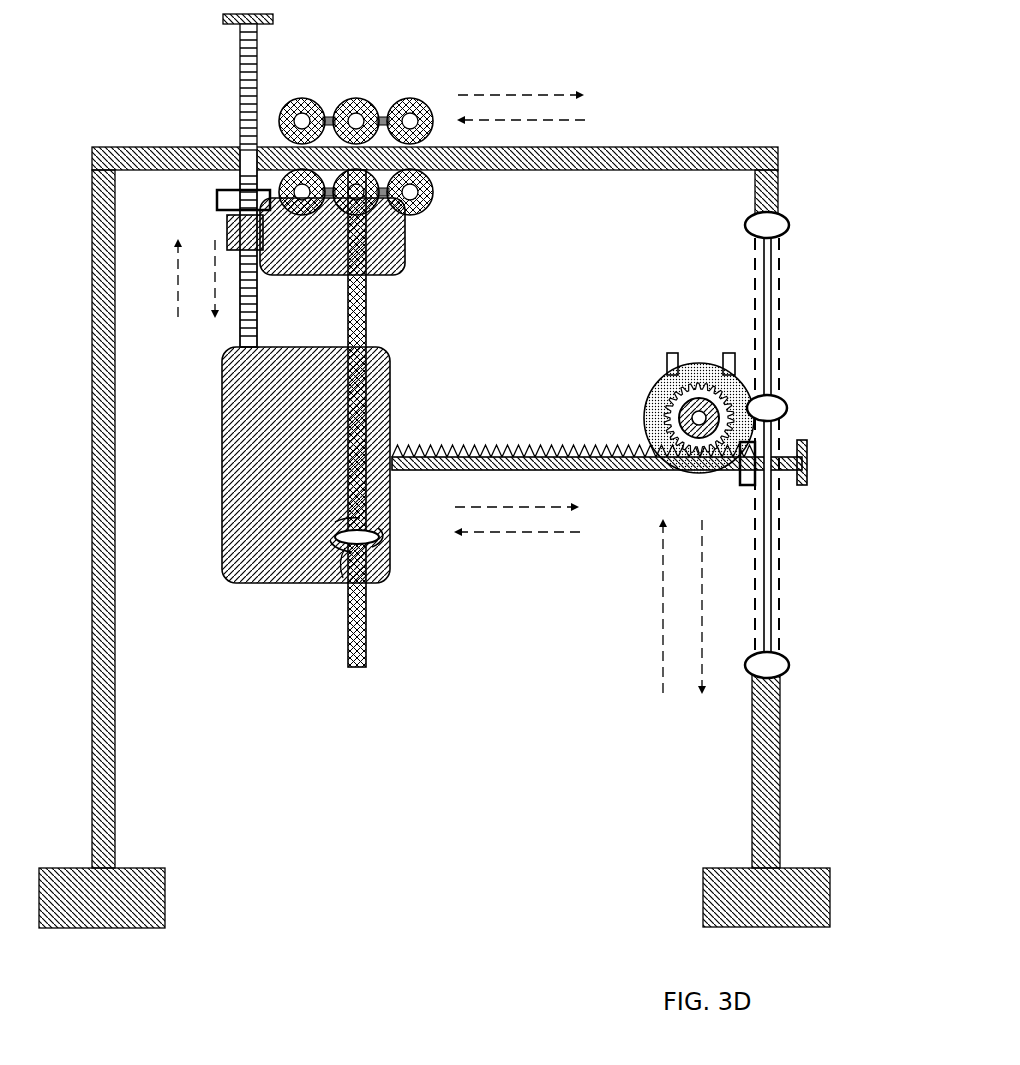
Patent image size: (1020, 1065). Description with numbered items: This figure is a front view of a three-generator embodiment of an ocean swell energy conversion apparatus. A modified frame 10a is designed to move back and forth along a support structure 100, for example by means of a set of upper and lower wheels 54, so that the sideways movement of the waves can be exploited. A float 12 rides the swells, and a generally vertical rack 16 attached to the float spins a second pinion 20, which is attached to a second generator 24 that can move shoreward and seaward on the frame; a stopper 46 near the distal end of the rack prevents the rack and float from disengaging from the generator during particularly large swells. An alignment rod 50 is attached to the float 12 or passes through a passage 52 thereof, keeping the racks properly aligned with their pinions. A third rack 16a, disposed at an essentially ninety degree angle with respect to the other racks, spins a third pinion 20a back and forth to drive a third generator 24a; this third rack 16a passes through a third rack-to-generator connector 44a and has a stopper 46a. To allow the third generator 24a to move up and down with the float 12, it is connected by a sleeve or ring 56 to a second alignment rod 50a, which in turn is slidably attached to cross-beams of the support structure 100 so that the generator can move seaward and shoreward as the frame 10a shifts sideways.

The support structure 100 is at (105, 690).
The stopper 46 is at (223, 19).
The vertical rack 16 is at (240, 325).
The upper and lower wheels 54 is at (407, 98).
The second generator 24 is at (405, 245).
The second pinion 20 is at (227, 232).
The float 12 is at (248, 578).
The modified frame 10a is at (368, 307).
The passage 52 is at (379, 540).
The alignment rod 50 is at (345, 560).
The third rack 16a is at (478, 446).
The third generator 24a is at (699, 363).
The third pinion 20a is at (650, 408).
The second alignment rod 50a is at (768, 552).
The sleeve or ring 56 is at (785, 406).
The third rack-to-generator connector 44a is at (740, 472).
The stopper 46a is at (807, 462).